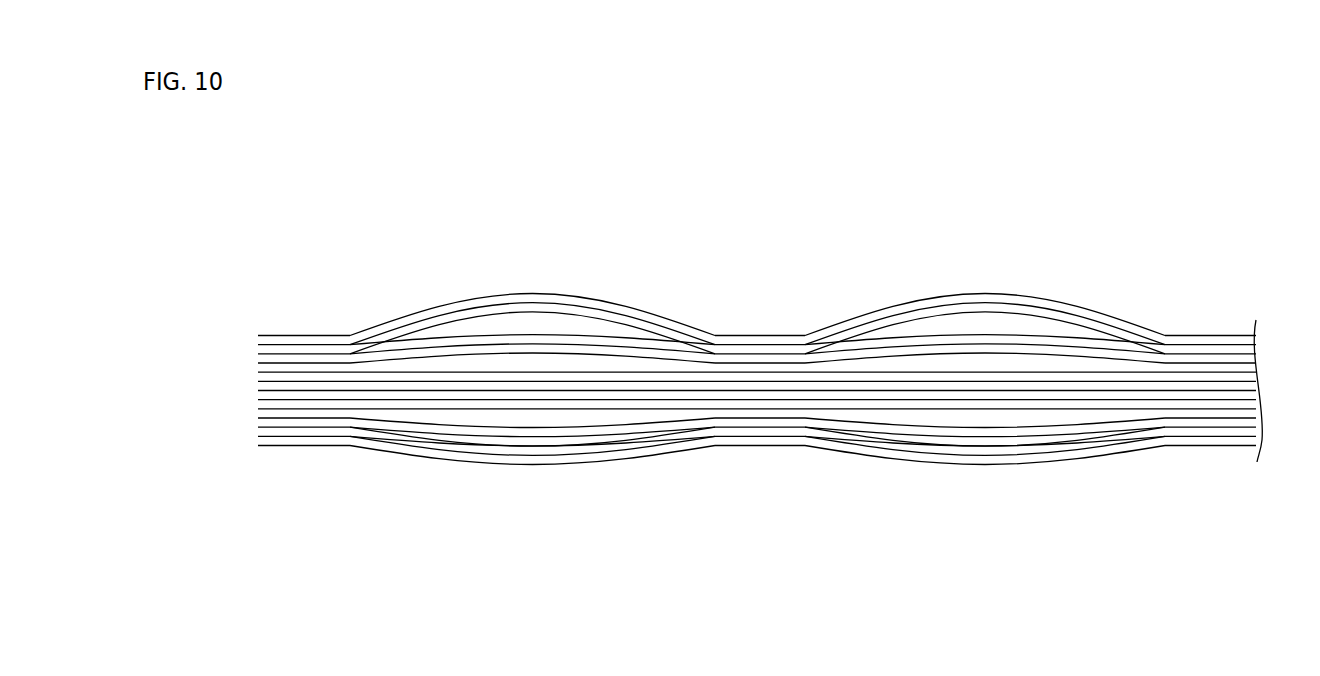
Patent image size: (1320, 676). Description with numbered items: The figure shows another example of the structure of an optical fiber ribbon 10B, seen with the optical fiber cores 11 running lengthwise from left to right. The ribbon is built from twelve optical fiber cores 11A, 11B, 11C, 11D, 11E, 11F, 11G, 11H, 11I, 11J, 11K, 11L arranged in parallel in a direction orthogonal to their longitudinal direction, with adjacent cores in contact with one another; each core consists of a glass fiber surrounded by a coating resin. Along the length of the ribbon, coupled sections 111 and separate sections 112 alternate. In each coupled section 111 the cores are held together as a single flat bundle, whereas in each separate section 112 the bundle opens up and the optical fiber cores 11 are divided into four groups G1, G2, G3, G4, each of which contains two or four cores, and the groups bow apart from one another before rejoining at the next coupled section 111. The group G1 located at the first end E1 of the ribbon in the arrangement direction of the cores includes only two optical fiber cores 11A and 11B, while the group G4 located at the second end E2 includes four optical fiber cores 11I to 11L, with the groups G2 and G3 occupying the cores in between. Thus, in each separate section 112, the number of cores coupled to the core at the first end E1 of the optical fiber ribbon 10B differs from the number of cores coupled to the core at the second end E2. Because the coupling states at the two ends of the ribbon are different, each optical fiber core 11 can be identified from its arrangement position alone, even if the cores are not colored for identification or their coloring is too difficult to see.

The optical fiber ribbon 10B is at (900, 235).
The optical fiber cores 11 is at (703, 390).
The optical fiber core 11A is at (257, 336).
The optical fiber core 11B is at (257, 345).
The optical fiber core 11C is at (257, 354).
The optical fiber core 11D is at (257, 363).
The optical fiber core 11E is at (257, 372).
The optical fiber core 11F is at (257, 381).
The optical fiber core 11G is at (257, 400).
The optical fiber core 11H is at (257, 409).
The optical fiber core 11I is at (257, 418).
The optical fiber core 11J is at (257, 427).
The optical fiber core 11K is at (257, 436).
The optical fiber core 11L is at (257, 446).
The coupled section 111 is at (306, 318).
The separate section 112 is at (531, 478).
The first end E1 is at (437, 303).
The second end E2 is at (440, 460).
The group G1 is at (537, 306).
The group G2 is at (590, 343).
The group G3 is at (597, 405).
The group G4 is at (657, 453).